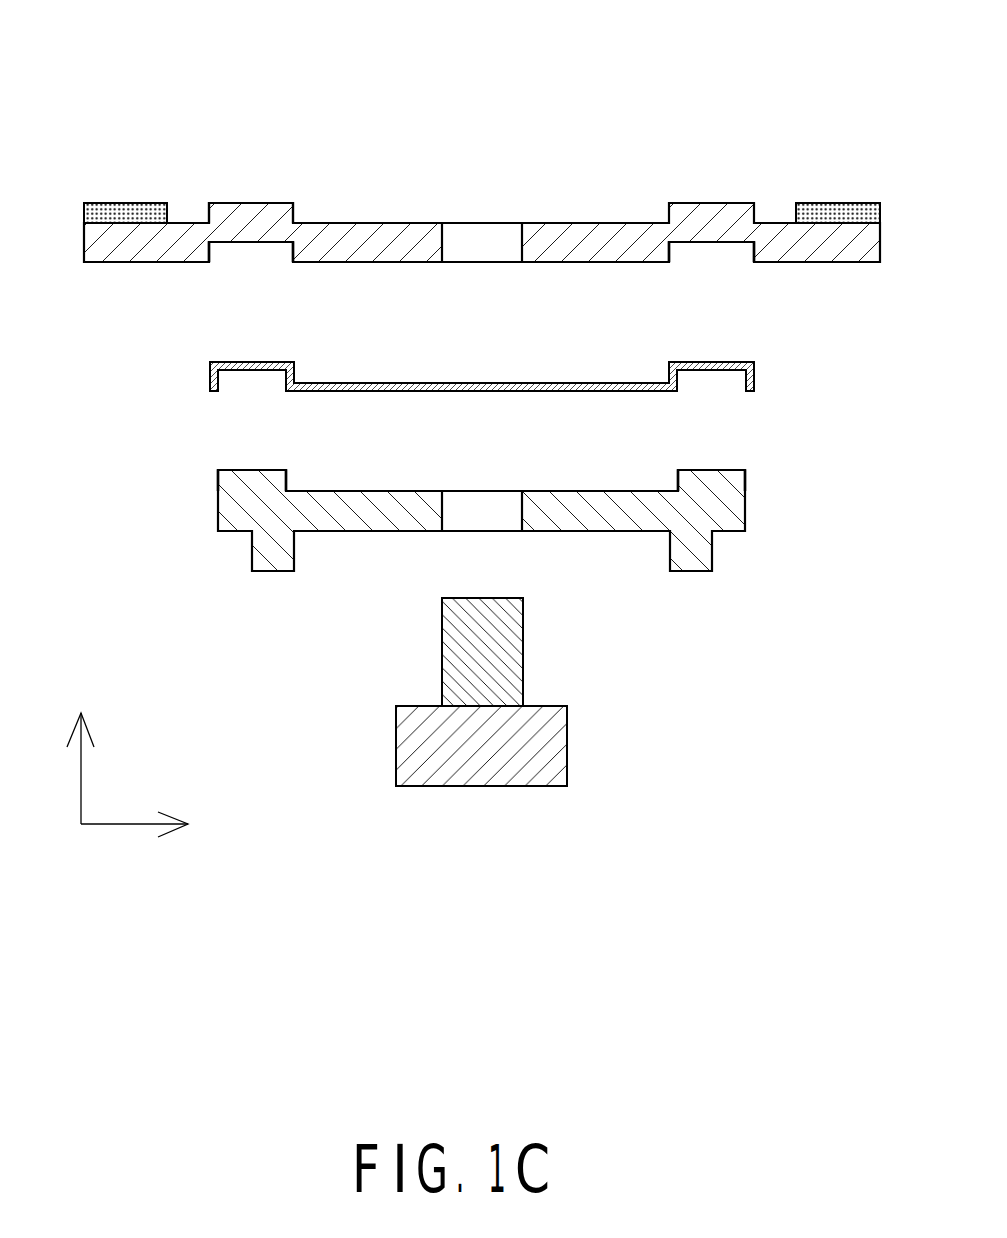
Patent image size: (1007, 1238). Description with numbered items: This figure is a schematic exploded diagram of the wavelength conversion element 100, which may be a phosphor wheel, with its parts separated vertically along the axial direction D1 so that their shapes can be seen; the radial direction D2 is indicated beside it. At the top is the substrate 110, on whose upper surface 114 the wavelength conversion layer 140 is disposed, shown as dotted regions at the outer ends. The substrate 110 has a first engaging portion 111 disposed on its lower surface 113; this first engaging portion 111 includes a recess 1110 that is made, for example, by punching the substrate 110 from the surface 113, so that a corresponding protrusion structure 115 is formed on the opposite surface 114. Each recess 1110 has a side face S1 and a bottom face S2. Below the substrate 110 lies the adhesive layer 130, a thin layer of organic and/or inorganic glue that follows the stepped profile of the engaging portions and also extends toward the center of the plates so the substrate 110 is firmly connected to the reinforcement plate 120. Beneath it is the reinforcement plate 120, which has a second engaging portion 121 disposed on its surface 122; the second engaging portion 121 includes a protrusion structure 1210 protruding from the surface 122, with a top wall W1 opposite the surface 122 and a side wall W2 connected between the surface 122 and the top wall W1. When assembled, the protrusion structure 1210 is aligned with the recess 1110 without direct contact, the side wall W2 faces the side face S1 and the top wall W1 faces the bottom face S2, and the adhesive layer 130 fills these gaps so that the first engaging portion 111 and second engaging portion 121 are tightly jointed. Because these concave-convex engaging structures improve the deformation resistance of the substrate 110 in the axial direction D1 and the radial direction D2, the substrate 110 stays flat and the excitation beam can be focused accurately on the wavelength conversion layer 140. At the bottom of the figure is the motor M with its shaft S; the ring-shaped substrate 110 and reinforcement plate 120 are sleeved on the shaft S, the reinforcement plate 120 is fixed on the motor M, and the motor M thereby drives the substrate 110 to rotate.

The wavelength conversion element 100 is at (88, 70).
The substrate 110 is at (83, 242).
The first engaging portion 111 is at (481, 252).
The recess 1110 is at (258, 252).
The surface 113 is at (540, 265).
The surface 114 is at (582, 234).
The protrusion structure 115 is at (275, 210).
The reinforcement plate 120 is at (270, 562).
The second engaging portion 121 is at (481, 480).
The protrusion structure 1210 is at (262, 482).
The surface 122 is at (540, 477).
The adhesive layer 130 is at (210, 378).
The wavelength conversion layer 140 is at (83, 213).
The side face S1 is at (207, 255).
The bottom face S2 is at (249, 255).
The top wall W1 is at (218, 470).
The side wall W2 is at (218, 480).
The shaft S is at (510, 665).
The motor M is at (548, 750).
The axial direction D1 is at (80, 754).
The radial direction D2 is at (153, 824).